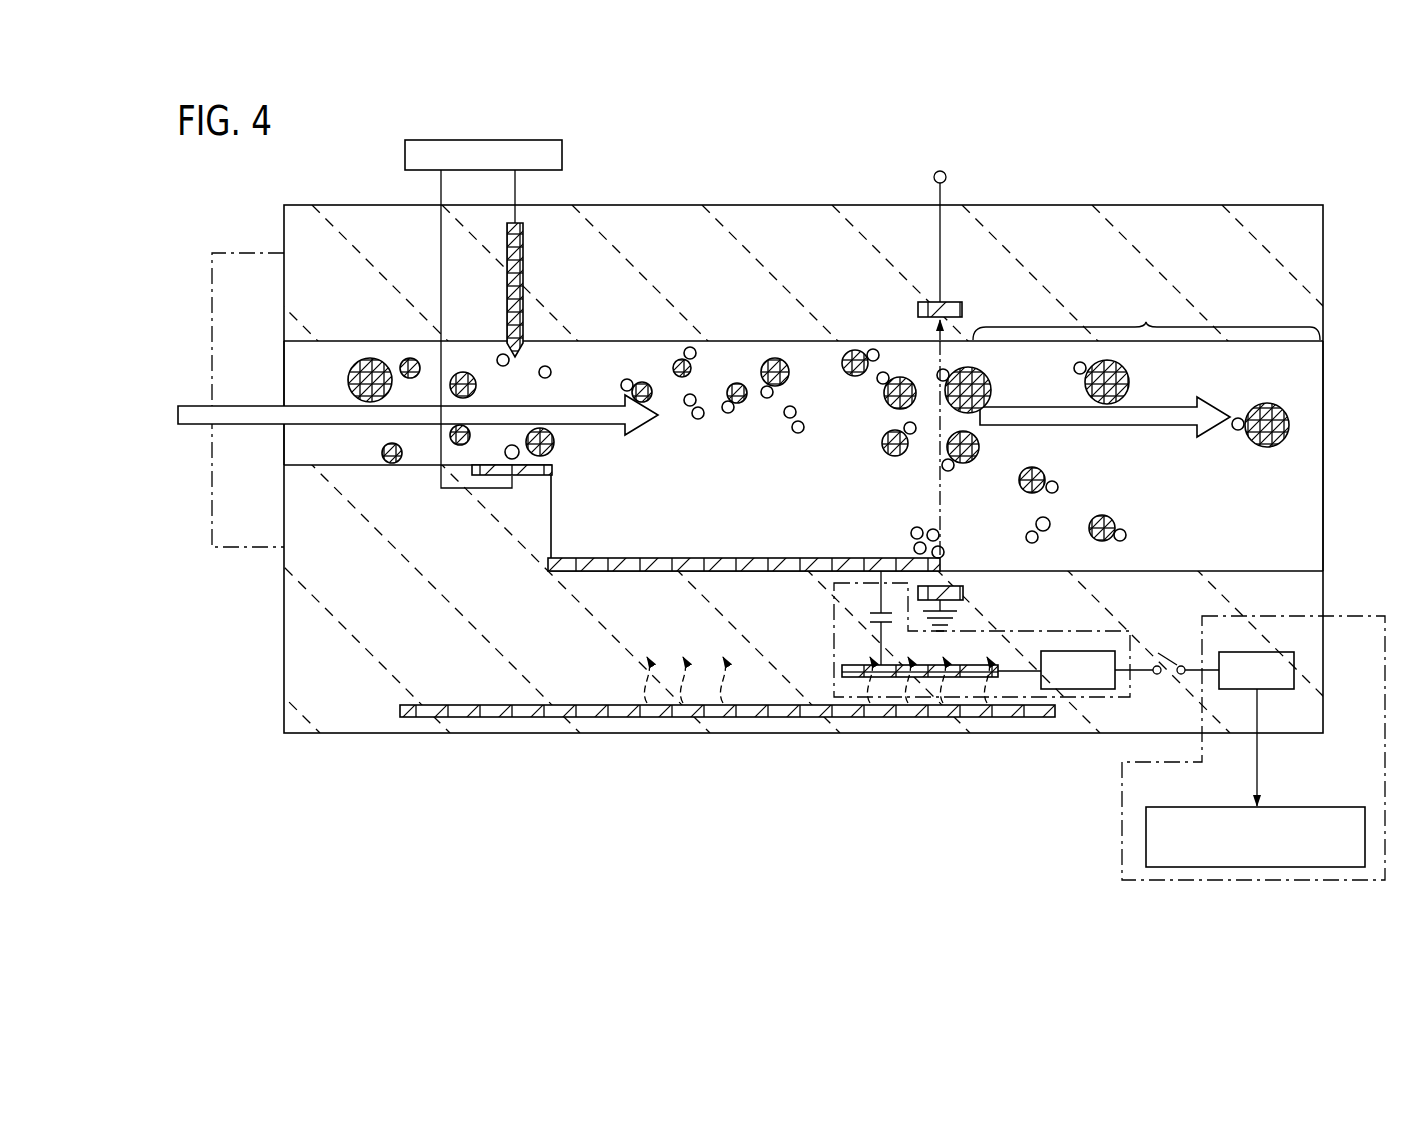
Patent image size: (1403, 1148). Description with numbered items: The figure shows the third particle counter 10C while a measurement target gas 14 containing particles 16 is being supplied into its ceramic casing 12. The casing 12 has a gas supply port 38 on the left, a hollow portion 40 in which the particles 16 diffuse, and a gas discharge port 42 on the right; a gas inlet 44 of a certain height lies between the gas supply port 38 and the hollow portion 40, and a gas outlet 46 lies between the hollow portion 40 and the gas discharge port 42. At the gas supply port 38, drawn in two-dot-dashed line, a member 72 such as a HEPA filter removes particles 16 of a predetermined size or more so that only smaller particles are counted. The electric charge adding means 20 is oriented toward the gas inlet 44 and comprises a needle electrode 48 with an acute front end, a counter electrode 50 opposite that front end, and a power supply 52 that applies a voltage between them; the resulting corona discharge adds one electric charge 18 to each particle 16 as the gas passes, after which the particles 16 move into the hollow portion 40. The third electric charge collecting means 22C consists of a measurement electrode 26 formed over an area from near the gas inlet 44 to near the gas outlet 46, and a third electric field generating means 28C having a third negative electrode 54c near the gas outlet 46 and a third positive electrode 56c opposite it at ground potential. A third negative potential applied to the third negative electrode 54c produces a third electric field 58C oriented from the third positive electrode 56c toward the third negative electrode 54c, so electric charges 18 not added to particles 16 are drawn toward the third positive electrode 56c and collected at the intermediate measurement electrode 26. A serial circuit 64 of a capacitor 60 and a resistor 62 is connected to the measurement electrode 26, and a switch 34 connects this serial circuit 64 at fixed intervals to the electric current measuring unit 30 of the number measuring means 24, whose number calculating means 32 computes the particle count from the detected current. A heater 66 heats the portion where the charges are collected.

The third particle counter 10C is at (298, 176).
The casing 12 is at (705, 205).
The measurement target gas 14 is at (250, 427).
The particles 16 is at (374, 358).
The electric charges 18 is at (697, 422).
The electric charge adding means 20 is at (540, 261).
The third electric charge collecting means 22C is at (733, 557).
The number measuring means 24 is at (1122, 812).
The measurement electrode 26 is at (635, 558).
The third electric field generating means 28C is at (948, 296).
The electric current measuring unit 30 is at (1258, 652).
The number calculating means 32 is at (1302, 807).
The switch 34 is at (1171, 674).
The gas supply port 38 is at (283, 380).
The hollow portion 40 is at (731, 357).
The gas discharge port 42 is at (1325, 435).
The gas inlet 44 is at (353, 347).
The gas outlet 46 is at (1148, 318).
The needle electrode 48 is at (525, 312).
The counter electrode 50 is at (533, 477).
The power supply 52 is at (490, 140).
The third negative electrode 54c is at (918, 310).
The third positive electrode 56c is at (965, 593).
The third electric field 58C is at (940, 490).
The capacitor 60 is at (867, 615).
The resistor 62 is at (1085, 650).
The serial circuit 64 is at (1020, 630).
The heater 66 is at (452, 712).
The member for removing particles 72 is at (233, 548).